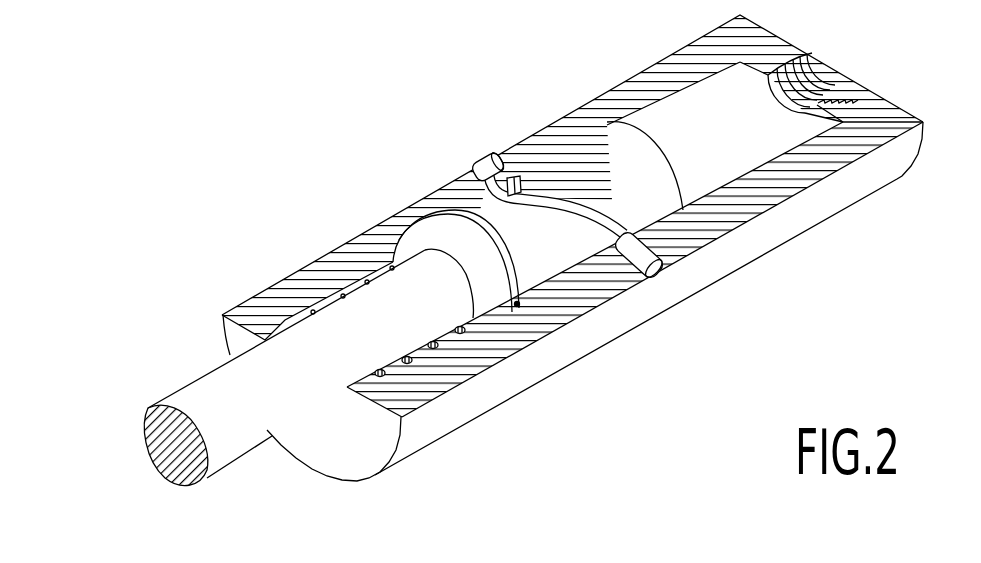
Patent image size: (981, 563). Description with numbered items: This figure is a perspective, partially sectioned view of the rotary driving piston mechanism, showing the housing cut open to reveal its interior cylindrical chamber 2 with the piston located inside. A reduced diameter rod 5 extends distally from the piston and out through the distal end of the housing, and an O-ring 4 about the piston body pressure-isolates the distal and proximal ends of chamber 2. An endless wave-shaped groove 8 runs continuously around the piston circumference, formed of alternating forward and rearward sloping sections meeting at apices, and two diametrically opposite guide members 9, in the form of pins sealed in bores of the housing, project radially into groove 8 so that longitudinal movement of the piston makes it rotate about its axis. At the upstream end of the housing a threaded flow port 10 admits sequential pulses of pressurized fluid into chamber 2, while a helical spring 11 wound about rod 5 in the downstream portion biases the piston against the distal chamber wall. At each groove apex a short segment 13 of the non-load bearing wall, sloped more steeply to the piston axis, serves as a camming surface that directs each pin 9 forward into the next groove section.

The interior cylindrical chamber 2 is at (733, 163).
The O-ring 4 is at (517, 303).
The rod 5 is at (227, 390).
The endless wave-shaped groove 8 is at (558, 210).
The guide members 9 is at (487, 170).
The flow port 10 is at (808, 113).
The helical spring 11 is at (317, 313).
The short segment 13 is at (520, 183).